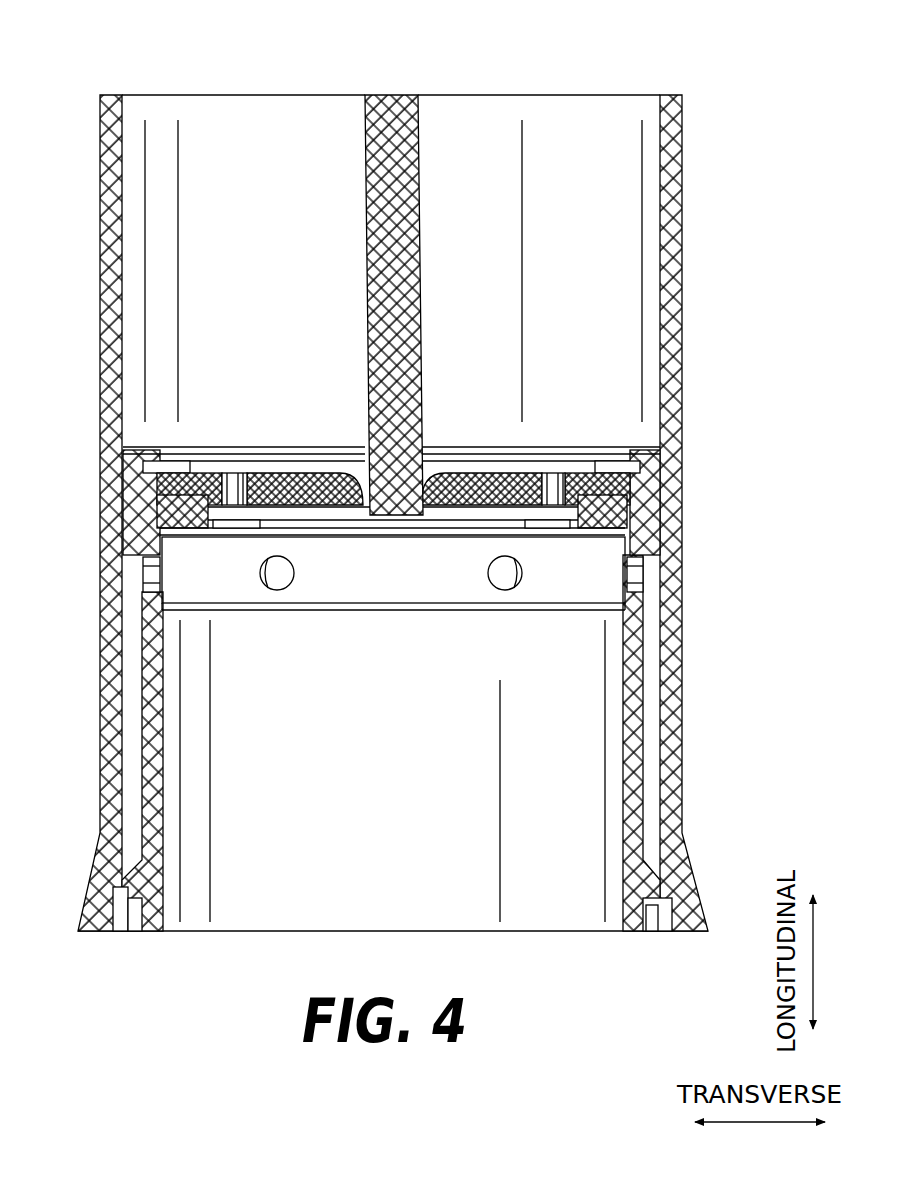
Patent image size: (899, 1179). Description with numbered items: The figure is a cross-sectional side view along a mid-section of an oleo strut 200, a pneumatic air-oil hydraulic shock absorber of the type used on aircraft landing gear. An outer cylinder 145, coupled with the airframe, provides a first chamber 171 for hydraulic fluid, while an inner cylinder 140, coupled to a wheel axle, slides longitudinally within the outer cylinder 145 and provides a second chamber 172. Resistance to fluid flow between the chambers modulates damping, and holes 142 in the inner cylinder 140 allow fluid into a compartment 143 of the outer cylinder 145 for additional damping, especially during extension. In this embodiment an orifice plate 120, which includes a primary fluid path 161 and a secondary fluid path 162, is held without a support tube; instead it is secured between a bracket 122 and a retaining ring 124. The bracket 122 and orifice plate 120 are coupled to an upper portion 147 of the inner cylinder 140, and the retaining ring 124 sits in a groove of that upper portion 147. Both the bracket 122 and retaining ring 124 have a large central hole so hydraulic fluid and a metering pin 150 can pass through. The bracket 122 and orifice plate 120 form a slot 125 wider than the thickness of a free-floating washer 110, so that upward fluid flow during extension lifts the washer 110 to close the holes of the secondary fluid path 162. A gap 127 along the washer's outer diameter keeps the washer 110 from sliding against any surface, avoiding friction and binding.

The oleo strut 200 is at (136, 50).
The first chamber 171 is at (452, 116).
The metering pin 150 is at (391, 186).
The outer cylinder 145 is at (680, 183).
The retaining ring 124 is at (150, 464).
The orifice plate 120 is at (168, 487).
The upper portion 147 is at (660, 488).
The bracket 122 is at (165, 512).
The holes 142 is at (150, 577).
The secondary fluid path 162 is at (240, 483).
The primary fluid path 161 is at (355, 480).
The slot 125 is at (508, 516).
The free-floating washer 110 is at (248, 532).
The gap 127 is at (575, 548).
The compartment 143 is at (135, 730).
The inner cylinder 140 is at (640, 790).
The second chamber 172 is at (547, 906).